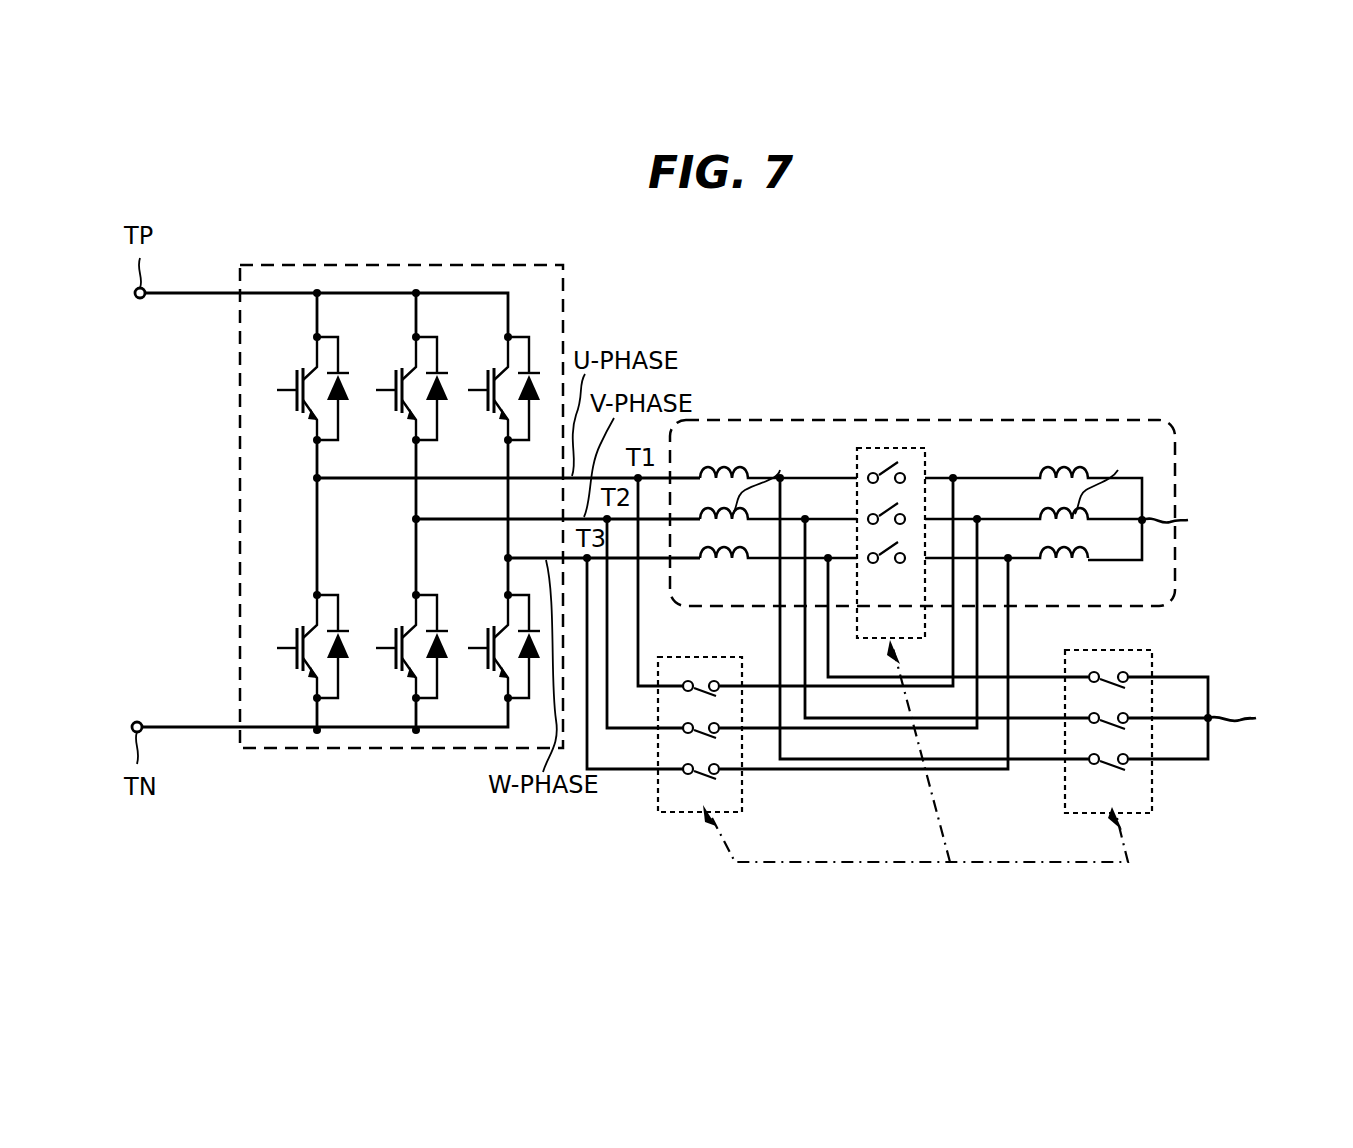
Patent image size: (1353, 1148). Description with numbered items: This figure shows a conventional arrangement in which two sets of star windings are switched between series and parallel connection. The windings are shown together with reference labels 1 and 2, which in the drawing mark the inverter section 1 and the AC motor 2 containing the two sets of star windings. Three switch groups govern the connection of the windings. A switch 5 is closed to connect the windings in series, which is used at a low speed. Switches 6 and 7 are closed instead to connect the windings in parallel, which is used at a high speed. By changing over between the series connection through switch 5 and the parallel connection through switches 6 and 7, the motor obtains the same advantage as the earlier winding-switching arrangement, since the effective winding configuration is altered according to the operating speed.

The inverter section 1 is at (313, 263).
The AC motor 2 is at (886, 414).
The switch 5 is at (928, 449).
The switch 6 is at (656, 808).
The switch 7 is at (1152, 800).